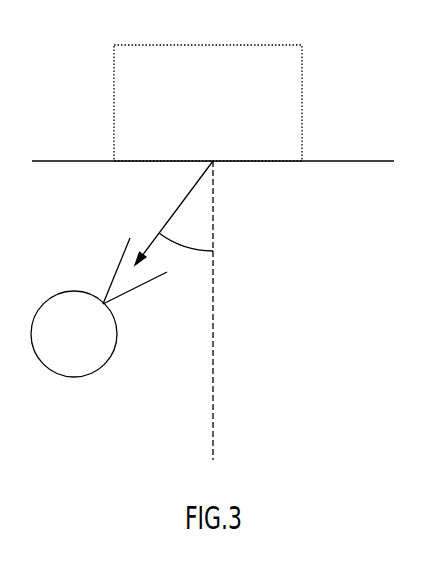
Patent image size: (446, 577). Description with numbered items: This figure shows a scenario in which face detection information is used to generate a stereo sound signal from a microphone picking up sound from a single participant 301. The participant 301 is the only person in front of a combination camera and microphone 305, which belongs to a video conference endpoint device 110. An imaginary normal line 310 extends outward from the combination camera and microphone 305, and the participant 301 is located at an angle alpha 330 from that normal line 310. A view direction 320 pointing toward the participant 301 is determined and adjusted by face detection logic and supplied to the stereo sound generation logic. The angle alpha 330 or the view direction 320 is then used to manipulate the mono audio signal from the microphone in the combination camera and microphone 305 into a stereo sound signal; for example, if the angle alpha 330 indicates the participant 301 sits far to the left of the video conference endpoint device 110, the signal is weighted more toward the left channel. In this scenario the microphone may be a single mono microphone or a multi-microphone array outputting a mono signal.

The combination camera and microphone 305 is at (235, 45).
The video conference endpoint device 110 is at (330, 161).
The imaginary normal line 310 is at (214, 354).
The view direction 320 is at (175, 212).
The angle α 330 is at (193, 256).
The participant 301 is at (42, 304).